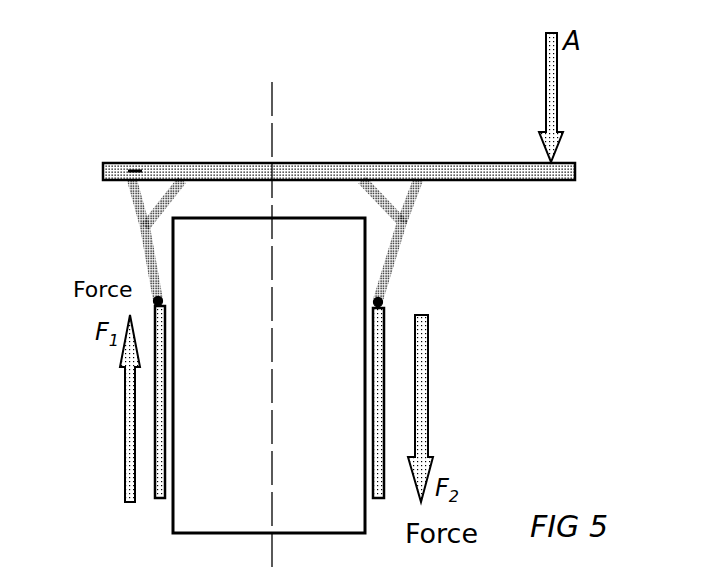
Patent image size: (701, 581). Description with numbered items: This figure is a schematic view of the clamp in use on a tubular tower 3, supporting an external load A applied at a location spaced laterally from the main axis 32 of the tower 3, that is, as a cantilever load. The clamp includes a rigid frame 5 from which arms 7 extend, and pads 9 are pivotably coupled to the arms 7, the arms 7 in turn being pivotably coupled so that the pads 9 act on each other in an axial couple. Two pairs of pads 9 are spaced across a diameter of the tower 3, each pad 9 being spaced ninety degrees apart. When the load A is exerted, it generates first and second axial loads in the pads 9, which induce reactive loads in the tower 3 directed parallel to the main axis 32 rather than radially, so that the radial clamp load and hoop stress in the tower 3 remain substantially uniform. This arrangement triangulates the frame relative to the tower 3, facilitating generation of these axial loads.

The tower 3 is at (203, 503).
The rigid frame 5 is at (472, 163).
The arms 7 is at (416, 212).
The pads 9 is at (167, 387).
The main axis 32 is at (272, 85).